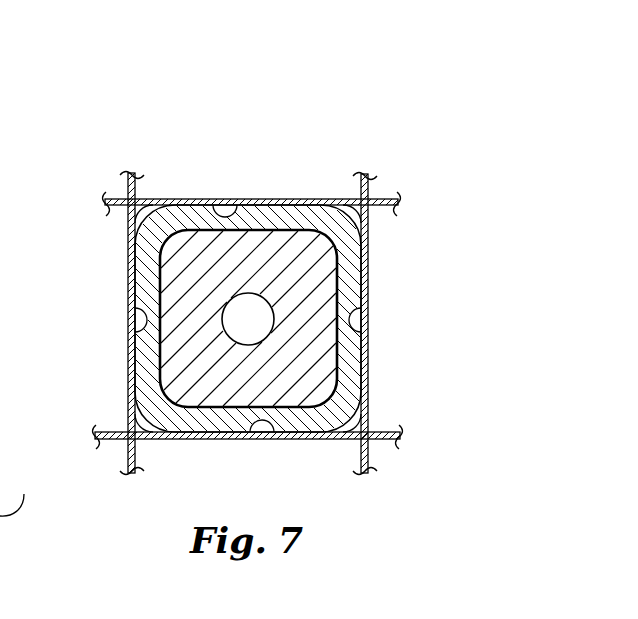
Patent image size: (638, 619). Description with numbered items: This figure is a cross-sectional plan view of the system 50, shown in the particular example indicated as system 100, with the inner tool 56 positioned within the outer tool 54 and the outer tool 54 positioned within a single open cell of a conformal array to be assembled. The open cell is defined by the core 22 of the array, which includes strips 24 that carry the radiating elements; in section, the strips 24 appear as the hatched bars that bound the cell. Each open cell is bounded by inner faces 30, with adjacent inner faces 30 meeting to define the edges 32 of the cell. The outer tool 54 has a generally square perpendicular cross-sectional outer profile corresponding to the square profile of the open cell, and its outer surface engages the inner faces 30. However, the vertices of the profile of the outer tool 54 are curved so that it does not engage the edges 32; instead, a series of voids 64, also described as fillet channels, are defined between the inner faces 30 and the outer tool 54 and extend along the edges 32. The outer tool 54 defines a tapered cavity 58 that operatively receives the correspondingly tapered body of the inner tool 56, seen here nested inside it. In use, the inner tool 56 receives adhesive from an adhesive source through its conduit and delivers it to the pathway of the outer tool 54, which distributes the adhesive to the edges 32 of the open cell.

The system 50 is at (368, 58).
The system 100 is at (321, 127).
The core 22 is at (169, 447).
The strips 24 is at (115, 212).
The edges 32 is at (132, 232).
The outer tool 54 is at (372, 360).
The inner tool 56 is at (344, 274).
The cavity 58 is at (160, 372).
The inner faces 30 is at (236, 202).
The voids 64 is at (150, 214).